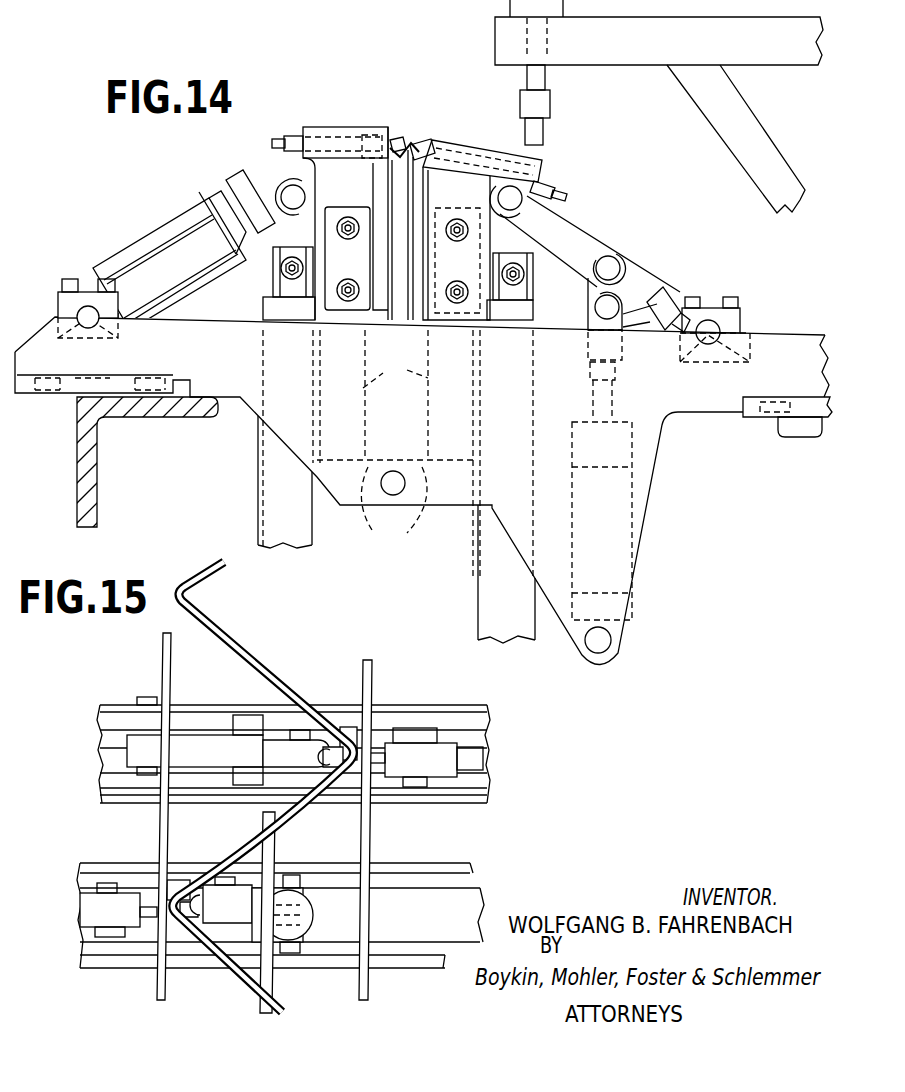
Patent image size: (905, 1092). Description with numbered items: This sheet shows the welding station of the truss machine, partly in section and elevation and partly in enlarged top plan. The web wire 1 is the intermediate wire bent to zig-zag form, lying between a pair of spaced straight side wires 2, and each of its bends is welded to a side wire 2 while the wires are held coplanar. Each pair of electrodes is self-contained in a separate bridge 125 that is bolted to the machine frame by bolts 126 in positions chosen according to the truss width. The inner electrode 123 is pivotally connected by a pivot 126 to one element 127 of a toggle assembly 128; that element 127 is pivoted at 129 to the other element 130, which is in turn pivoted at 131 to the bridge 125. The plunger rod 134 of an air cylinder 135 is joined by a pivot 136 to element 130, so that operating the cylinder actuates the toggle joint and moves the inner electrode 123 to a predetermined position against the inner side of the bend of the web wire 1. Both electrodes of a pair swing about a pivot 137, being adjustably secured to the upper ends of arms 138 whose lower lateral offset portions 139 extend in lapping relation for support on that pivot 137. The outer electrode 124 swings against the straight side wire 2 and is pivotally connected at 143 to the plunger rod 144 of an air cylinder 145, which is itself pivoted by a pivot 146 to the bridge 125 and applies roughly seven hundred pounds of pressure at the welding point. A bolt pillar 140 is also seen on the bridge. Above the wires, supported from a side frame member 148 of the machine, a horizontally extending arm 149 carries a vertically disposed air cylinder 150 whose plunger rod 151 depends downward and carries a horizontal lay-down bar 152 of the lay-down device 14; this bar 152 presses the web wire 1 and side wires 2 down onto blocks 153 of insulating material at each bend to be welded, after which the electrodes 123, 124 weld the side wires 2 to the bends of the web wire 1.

In FIG. 14, the web wire 1 is at (425, 150).
In FIG. 15, the web wire 1 is at (243, 653).
In FIG. 14, the side wires 2 is at (387, 158).
In FIG. 15, the side wires 2 is at (164, 657).
In FIG. 14, the lay-down device 14 is at (496, 66).
In FIG. 14, the inner electrode 123 is at (421, 141).
In FIG. 15, the inner electrode 123 is at (342, 733).
In FIG. 14, the outer electrode 124 is at (394, 135).
In FIG. 15, the outer electrode 124 is at (373, 748).
In FIG. 14, the bridge 125 is at (182, 358).
In FIG. 14, the pivot 126 is at (185, 385).
In FIG. 14, the toggle element 127 is at (558, 225).
In FIG. 14, the toggle assembly 128 is at (630, 255).
In FIG. 14, the pivot 129 is at (596, 268).
In FIG. 14, the toggle element 130 is at (645, 282).
In FIG. 14, the pivot 131 is at (710, 327).
In FIG. 14, the plunger rod 134 is at (618, 383).
In FIG. 14, the air cylinder 135 is at (633, 497).
In FIG. 14, the pivot 136 is at (600, 315).
In FIG. 14, the pivot 137 is at (393, 471).
In FIG. 14, the arms 138 is at (395, 368).
In FIG. 14, the lateral offset portions 139 is at (394, 513).
In FIG. 14, the bolt pillar 140 is at (282, 268).
In FIG. 14, the pivot 143 is at (289, 186).
In FIG. 14, the plunger rod 144 is at (243, 213).
In FIG. 14, the air cylinder 145 is at (132, 253).
In FIG. 14, the pivot 146 is at (88, 305).
In FIG. 14, the side frame member 148 is at (82, 453).
In FIG. 14, the horizontally extending arm 149 is at (637, 57).
In FIG. 14, the air cylinder 150 is at (553, 8).
In FIG. 15, the air cylinder 150 is at (320, 922).
In FIG. 14, the plunger rod 151 is at (528, 80).
In FIG. 14, the lay-down bar 152 is at (541, 139).
In FIG. 15, the lay-down bar 152 is at (274, 845).
In FIG. 15, the block 153 is at (348, 730).